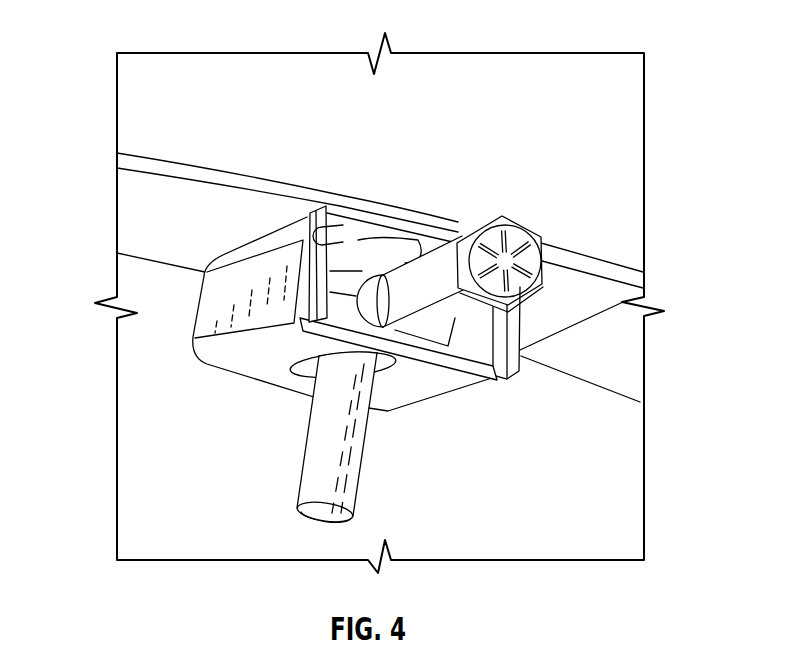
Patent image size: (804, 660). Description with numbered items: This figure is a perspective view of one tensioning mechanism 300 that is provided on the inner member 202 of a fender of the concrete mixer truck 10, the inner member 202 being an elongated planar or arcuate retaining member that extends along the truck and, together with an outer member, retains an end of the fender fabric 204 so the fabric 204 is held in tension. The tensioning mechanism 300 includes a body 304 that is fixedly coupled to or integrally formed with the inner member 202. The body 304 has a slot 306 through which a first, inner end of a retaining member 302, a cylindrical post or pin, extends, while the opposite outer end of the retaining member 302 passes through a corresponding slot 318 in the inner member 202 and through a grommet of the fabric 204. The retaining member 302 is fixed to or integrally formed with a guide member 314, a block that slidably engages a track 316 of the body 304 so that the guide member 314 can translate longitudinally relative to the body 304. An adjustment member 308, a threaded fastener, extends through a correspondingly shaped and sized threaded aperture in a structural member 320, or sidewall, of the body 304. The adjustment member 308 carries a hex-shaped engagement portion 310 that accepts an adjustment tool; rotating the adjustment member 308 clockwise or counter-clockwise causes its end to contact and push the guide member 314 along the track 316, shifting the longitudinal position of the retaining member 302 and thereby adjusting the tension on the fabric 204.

The concrete mixer truck 10 is at (82, 79).
The inner member 202 is at (135, 196).
The fabric 204 is at (619, 113).
The tensioning mechanism 300 is at (222, 425).
The retaining member 302 is at (345, 462).
The body 304 is at (218, 310).
The slot 306 is at (313, 377).
The adjustment member 308 is at (440, 262).
The engagement portion 310 is at (510, 242).
The guide member 314 is at (350, 257).
The track 316 is at (333, 253).
The slot 318 is at (403, 227).
The structural member 320 is at (503, 372).